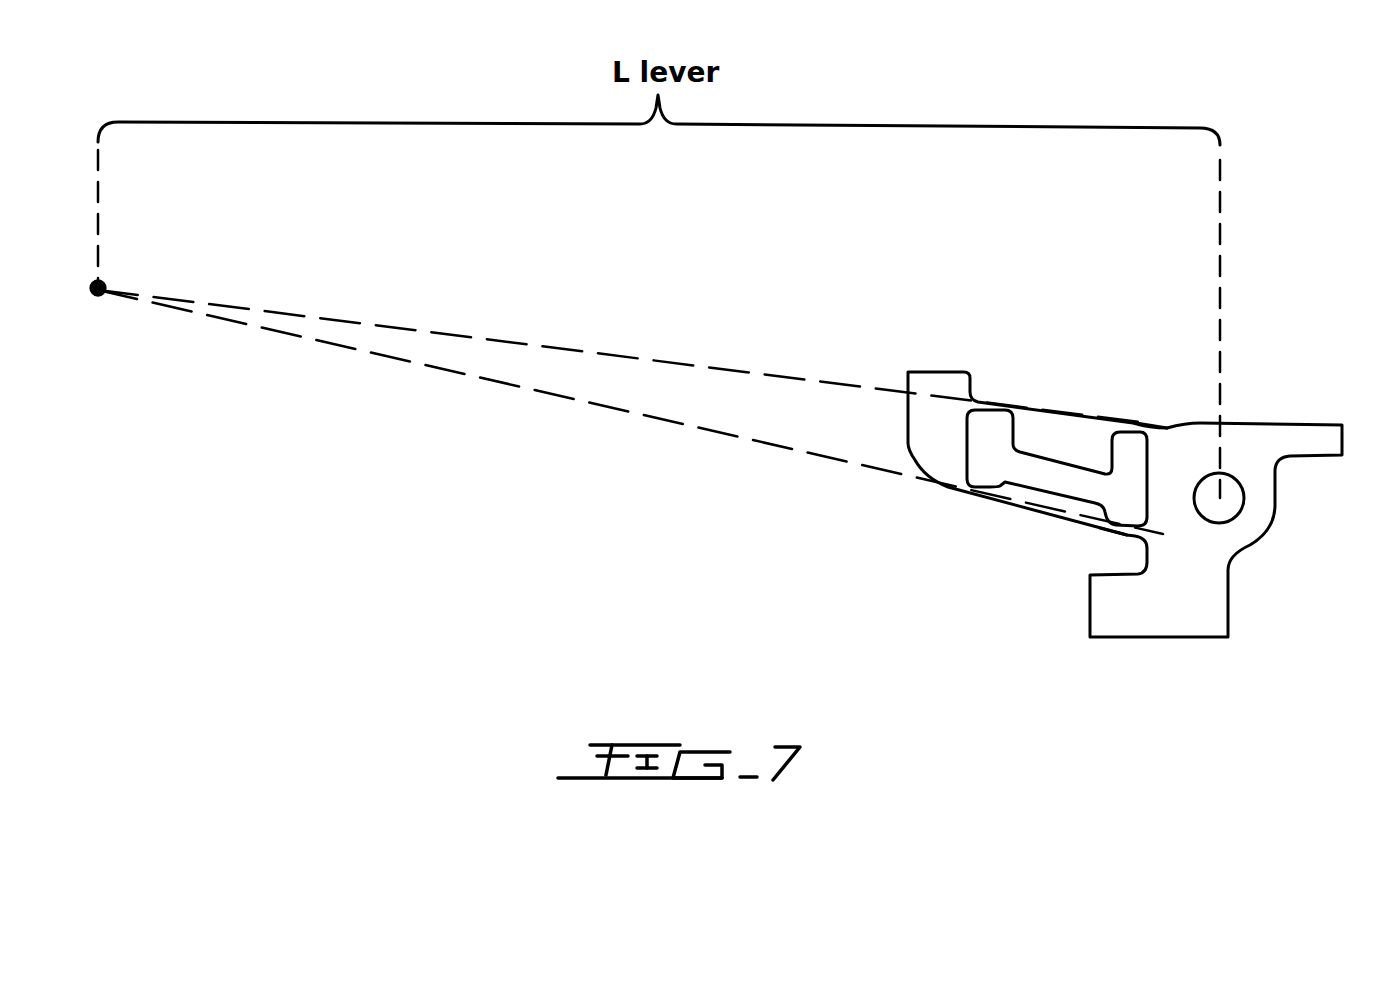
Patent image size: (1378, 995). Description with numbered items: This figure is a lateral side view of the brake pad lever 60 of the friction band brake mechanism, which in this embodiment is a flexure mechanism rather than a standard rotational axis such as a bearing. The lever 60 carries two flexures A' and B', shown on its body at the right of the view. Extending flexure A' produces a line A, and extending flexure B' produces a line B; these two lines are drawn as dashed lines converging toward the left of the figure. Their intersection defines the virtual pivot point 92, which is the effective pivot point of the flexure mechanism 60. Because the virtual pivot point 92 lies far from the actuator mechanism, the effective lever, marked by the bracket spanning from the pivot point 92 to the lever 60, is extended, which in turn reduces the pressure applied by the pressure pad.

The virtual pivot point 92 is at (98, 310).
The brake pad lever 60 is at (1270, 405).
The line A is at (619, 328).
The line B is at (630, 432).
The flexure A' is at (1135, 345).
The flexure B' is at (1052, 539).